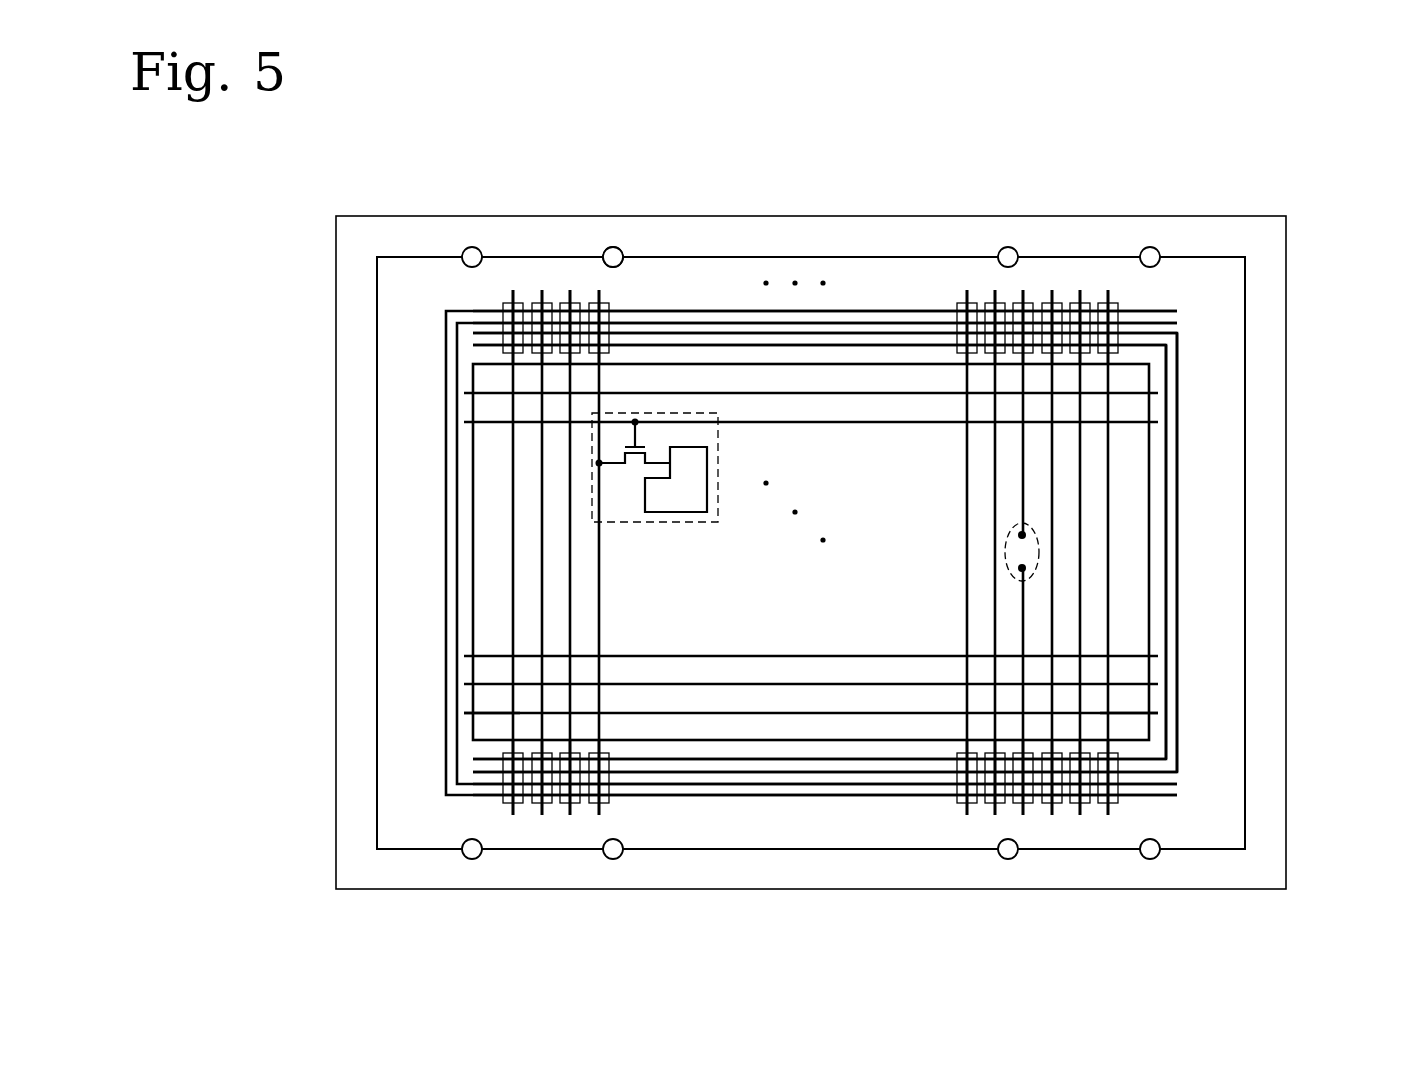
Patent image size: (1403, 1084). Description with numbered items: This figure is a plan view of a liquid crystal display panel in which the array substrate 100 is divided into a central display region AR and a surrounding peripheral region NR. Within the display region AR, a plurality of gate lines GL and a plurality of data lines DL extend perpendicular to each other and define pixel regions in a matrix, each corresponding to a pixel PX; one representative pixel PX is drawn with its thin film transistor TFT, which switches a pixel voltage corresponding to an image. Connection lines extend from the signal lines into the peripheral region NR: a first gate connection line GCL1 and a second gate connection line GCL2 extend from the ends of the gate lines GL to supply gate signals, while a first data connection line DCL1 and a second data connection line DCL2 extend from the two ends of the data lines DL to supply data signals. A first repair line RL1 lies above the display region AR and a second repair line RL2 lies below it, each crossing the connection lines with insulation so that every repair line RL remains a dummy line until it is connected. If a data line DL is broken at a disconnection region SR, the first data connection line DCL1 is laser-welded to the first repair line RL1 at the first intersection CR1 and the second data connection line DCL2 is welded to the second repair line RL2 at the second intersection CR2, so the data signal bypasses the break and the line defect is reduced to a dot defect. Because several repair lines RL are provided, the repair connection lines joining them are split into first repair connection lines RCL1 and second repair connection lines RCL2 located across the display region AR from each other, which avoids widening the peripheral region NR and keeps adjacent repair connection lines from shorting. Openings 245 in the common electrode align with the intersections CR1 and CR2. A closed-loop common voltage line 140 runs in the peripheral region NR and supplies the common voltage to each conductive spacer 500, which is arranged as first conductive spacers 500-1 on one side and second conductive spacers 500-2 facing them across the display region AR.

The array substrate 100 is at (1297, 128).
The common voltage line 140 is at (1205, 257).
The peripheral region NR is at (1201, 302).
The first conductive spacers 500-1 is at (472, 247).
The conductive spacer 500 is at (609, 248).
The second conductive spacers 500-2 is at (472, 859).
The second repair connection lines RCL2 is at (446, 512).
The first repair connection lines RCL1 is at (1177, 568).
The first repair line RL1 is at (701, 333).
The second repair line RL2 is at (705, 795).
The repair line RL is at (1188, 664).
The display region AR is at (1125, 454).
The gate lines GL is at (808, 714).
The first gate connection line GCL1 is at (468, 714).
The second gate connection line GCL2 is at (1153, 712).
The data lines DL is at (542, 605).
The first data connection line DCL1 is at (513, 296).
The second data connection line DCL2 is at (513, 748).
The openings 245 is at (1112, 302).
The first intersection CR1 is at (1023, 305).
The second intersection CR2 is at (1022, 793).
The pixel PX is at (650, 524).
The thin film transistor TFT is at (640, 445).
The disconnection region SR is at (1007, 563).